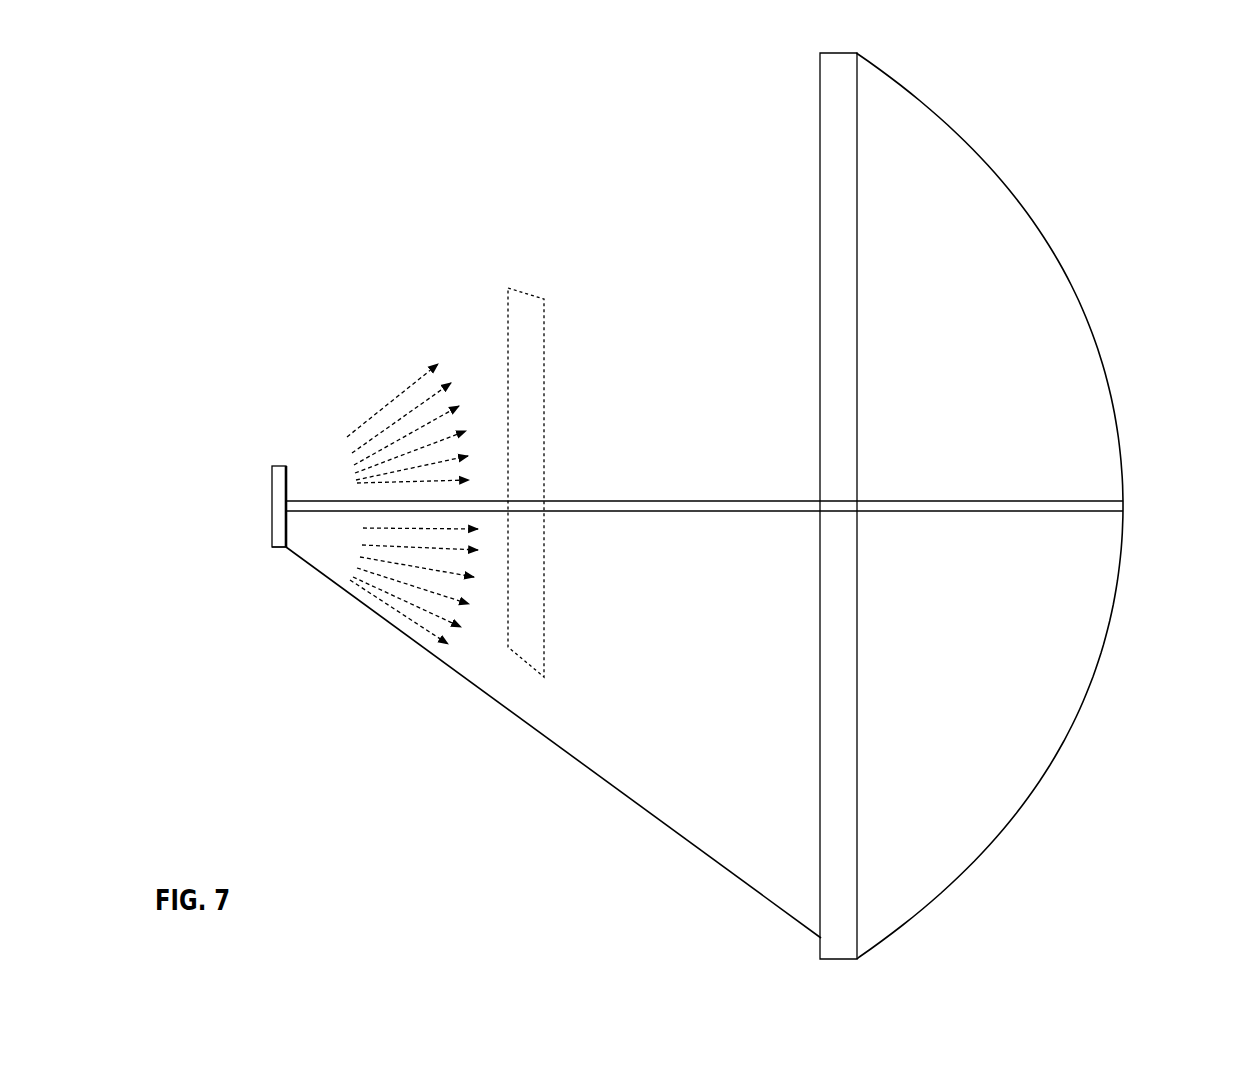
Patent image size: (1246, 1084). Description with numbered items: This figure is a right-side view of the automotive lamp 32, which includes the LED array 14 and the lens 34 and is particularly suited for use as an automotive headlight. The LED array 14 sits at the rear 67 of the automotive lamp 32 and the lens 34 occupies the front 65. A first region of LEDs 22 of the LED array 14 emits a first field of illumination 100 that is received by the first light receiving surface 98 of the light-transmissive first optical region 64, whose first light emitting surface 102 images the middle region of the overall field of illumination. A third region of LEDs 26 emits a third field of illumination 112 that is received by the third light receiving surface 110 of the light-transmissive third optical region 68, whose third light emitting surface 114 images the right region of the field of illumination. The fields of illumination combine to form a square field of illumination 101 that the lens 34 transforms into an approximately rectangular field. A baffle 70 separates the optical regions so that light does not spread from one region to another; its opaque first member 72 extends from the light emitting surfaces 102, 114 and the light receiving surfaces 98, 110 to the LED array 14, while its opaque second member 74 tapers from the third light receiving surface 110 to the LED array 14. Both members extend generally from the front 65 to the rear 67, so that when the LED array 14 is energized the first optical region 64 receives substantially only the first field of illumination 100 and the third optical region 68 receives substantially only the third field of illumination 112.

The LED array 14 is at (272, 474).
The first region of LEDs 22 is at (291, 476).
The third region of LEDs 26 is at (291, 531).
The automotive lamp 32 is at (446, 61).
The lens 34 is at (496, 190).
The light-transmissive first optical region 64 is at (961, 333).
The front 65 is at (1162, 252).
The rear 67 is at (170, 318).
The light-transmissive third optical region 68 is at (959, 685).
The baffle 70 is at (688, 446).
The opaque first member 72 is at (598, 512).
The opaque second member 74 is at (537, 727).
The first light receiving surface 98 is at (816, 293).
The first field of illumination 100 is at (396, 432).
The square field of illumination 101 is at (508, 288).
The first light emitting surface 102 is at (1082, 297).
The third light receiving surface 110 is at (818, 698).
The third field of illumination 112 is at (405, 590).
The third light emitting surface 114 is at (1080, 712).